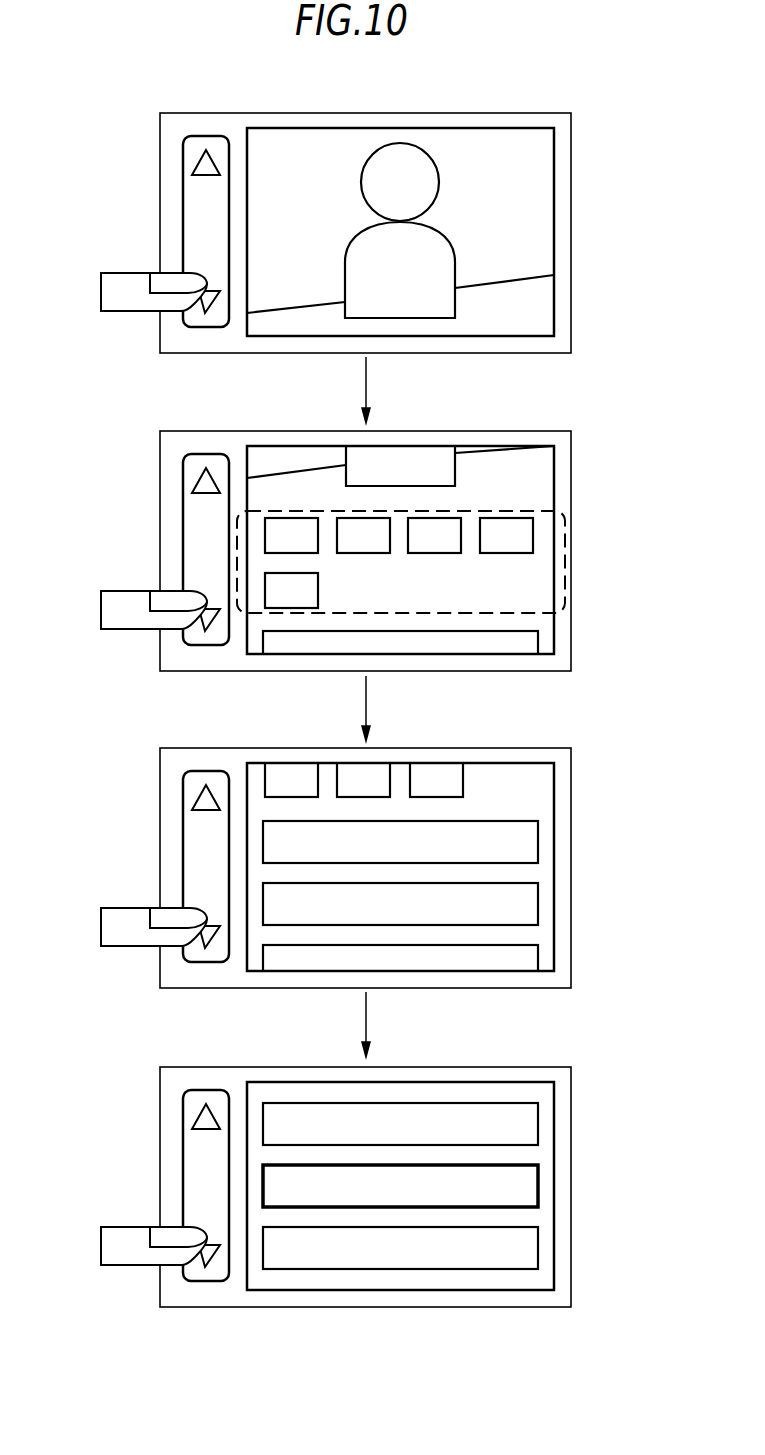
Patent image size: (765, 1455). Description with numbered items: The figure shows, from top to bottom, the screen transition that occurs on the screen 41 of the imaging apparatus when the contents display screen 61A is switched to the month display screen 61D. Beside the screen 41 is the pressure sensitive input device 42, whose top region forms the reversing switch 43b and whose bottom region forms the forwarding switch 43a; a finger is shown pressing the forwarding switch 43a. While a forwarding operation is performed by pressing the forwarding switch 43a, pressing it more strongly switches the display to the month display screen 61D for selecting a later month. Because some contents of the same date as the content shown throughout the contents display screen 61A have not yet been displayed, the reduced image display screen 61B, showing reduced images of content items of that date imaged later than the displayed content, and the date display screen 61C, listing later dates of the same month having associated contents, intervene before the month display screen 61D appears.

The screen 41 is at (527, 137).
The pressure sensitive input device 42 is at (208, 134).
The forwarding switch 43a is at (195, 309).
The reversing switch 43b is at (197, 158).
The contents display screen 61A is at (372, 142).
The reduced image display screen 61B is at (547, 564).
The date display screen 61C is at (547, 877).
The month display screen 61D is at (547, 1110).